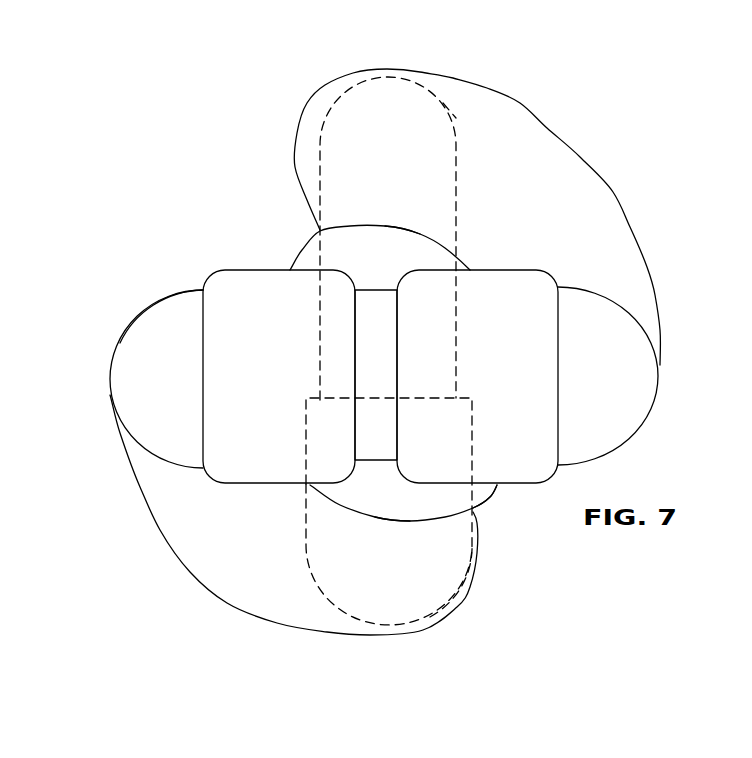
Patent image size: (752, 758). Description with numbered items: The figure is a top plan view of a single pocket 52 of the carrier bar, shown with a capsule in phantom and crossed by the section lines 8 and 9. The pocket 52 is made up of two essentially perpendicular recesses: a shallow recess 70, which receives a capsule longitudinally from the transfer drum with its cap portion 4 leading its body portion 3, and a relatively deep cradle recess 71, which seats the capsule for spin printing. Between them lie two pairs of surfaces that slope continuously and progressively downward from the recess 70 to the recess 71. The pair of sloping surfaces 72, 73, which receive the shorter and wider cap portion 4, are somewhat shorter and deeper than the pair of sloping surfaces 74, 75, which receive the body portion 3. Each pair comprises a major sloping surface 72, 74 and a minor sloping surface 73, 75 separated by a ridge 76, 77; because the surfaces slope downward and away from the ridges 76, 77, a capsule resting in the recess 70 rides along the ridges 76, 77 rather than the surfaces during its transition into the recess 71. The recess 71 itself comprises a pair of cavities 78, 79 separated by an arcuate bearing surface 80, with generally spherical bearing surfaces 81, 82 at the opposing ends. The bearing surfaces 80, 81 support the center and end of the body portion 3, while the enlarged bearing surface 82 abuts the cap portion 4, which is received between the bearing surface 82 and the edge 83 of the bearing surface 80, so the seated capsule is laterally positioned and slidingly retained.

The body portion 3 is at (443, 103).
The cap portion 4 is at (459, 604).
The section line 8- 8 is at (53, 328).
The section line 9- 9 is at (424, 27).
The pocket 52 is at (500, 506).
The recess 70 is at (325, 75).
The recess 71 is at (135, 302).
The major sloping surface 72 is at (241, 558).
The minor sloping surface 73 is at (366, 513).
The major sloping surface 74 is at (466, 181).
The minor sloping surface 75 is at (361, 265).
The ridge 76 is at (398, 522).
The ridge 77 is at (403, 229).
The cavity 78 is at (273, 373).
The cavity 79 is at (486, 383).
The arcuate bearing surface 80 is at (377, 382).
The spherical bearing surface 81 is at (584, 373).
The spherical bearing surface 82 is at (148, 396).
The edge 83 is at (355, 427).